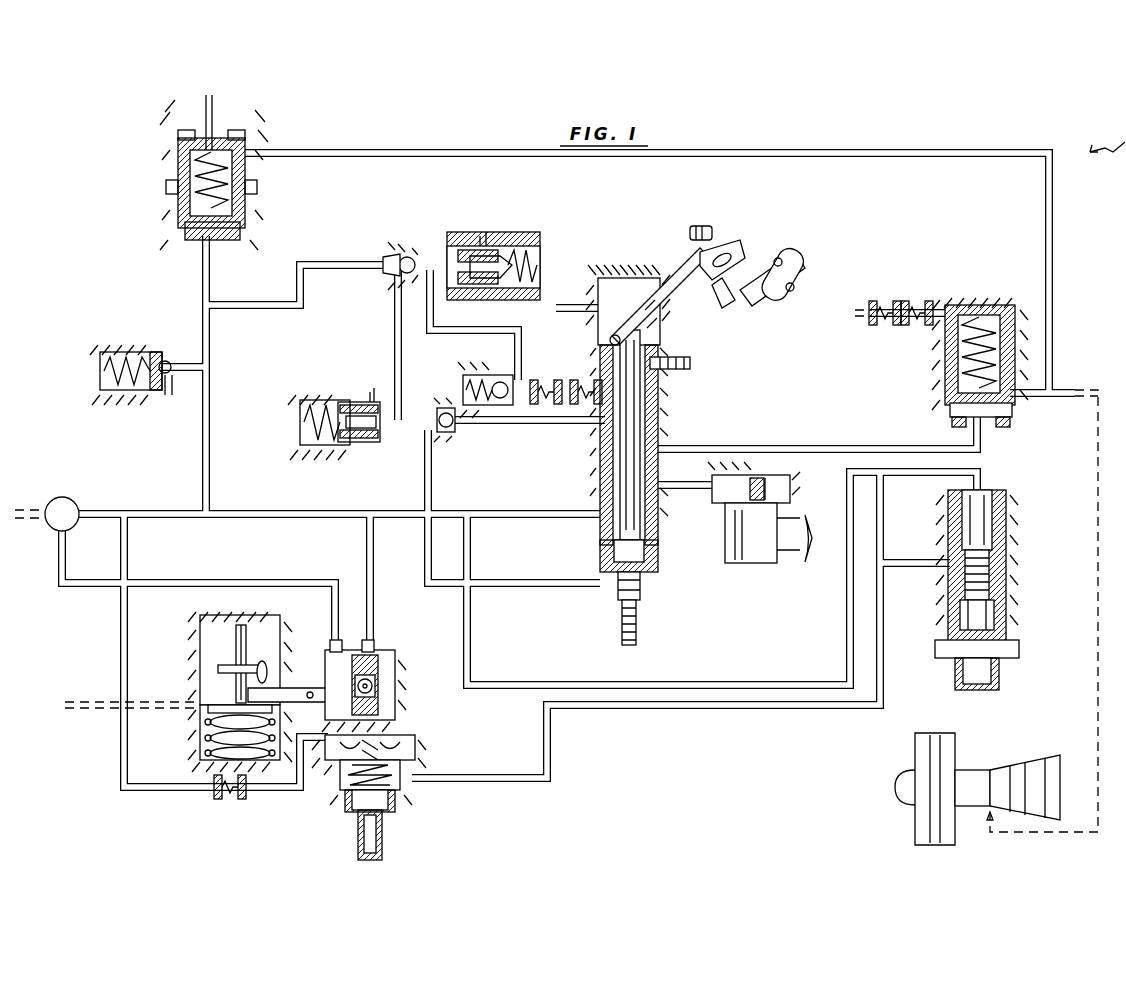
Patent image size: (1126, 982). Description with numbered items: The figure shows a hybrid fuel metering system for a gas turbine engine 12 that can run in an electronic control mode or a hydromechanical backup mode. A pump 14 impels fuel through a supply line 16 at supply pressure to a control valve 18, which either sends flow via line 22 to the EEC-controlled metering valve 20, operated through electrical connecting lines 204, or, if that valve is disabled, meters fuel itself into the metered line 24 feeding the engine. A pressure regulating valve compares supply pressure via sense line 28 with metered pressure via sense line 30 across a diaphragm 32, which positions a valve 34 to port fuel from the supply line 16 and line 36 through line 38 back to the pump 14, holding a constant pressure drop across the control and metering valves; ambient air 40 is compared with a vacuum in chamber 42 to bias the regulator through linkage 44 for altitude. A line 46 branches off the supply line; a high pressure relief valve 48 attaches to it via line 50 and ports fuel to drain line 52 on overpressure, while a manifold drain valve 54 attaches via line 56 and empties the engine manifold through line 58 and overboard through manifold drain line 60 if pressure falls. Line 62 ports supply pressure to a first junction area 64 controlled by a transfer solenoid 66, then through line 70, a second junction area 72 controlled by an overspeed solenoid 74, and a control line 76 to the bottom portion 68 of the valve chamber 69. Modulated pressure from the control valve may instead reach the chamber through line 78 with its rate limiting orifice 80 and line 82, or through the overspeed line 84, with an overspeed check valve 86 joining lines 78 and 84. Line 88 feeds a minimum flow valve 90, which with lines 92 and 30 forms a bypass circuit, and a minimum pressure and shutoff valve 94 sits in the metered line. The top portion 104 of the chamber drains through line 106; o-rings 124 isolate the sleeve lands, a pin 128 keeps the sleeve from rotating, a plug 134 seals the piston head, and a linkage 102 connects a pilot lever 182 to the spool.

The gas turbine engine 12 is at (985, 796).
The pump 14 is at (63, 497).
The supply line 16 is at (310, 508).
The control valve 18 is at (682, 429).
The metering valve 20 is at (793, 482).
The line 22 is at (676, 485).
The metered line 24 is at (720, 449).
The sense line 28 is at (124, 640).
The sense line 30 is at (478, 778).
The diaphragm 32 is at (395, 745).
The valve 34 is at (395, 655).
The line 36 is at (370, 558).
The line 38 is at (205, 583).
The ambient air 40 is at (78, 702).
The chamber 42 is at (272, 742).
The linkage 44 is at (276, 660).
The line 46 is at (206, 462).
The high pressure relief valve 48 is at (140, 350).
The line 50 is at (195, 362).
The drain line 52 is at (165, 410).
The manifold drain valve 54 is at (178, 176).
The line 56 is at (206, 268).
The line 58 is at (325, 153).
The manifold drain line 60 is at (220, 118).
The line 62 is at (282, 304).
The first junction area 64 is at (400, 254).
The transfer solenoid 66 is at (487, 246).
The bottom portion 68 is at (656, 580).
The valve chamber 69 is at (660, 530).
The line 70 is at (398, 335).
The second junction area 72 is at (440, 406).
The overspeed solenoid 74 is at (350, 445).
The control line 76 is at (428, 477).
The line 78 is at (546, 380).
The rate limiting orifice 80 is at (586, 380).
The line 82 is at (470, 330).
The overspeed line 84 is at (490, 424).
The overspeed check valve 86 is at (490, 375).
The line 88 is at (660, 685).
The minimum flow valve 90 is at (1006, 560).
The line 92 is at (903, 568).
The minimum pressure and shutoff valve 94 is at (945, 375).
The linkage 102 is at (662, 270).
The top portion 104 is at (628, 278).
The line 106 is at (580, 308).
The o-ring 124 is at (600, 500).
The pin 128 is at (680, 358).
The plug 134 is at (625, 575).
The pilot lever 182 is at (798, 270).
The electrical connecting lines 204 is at (809, 538).